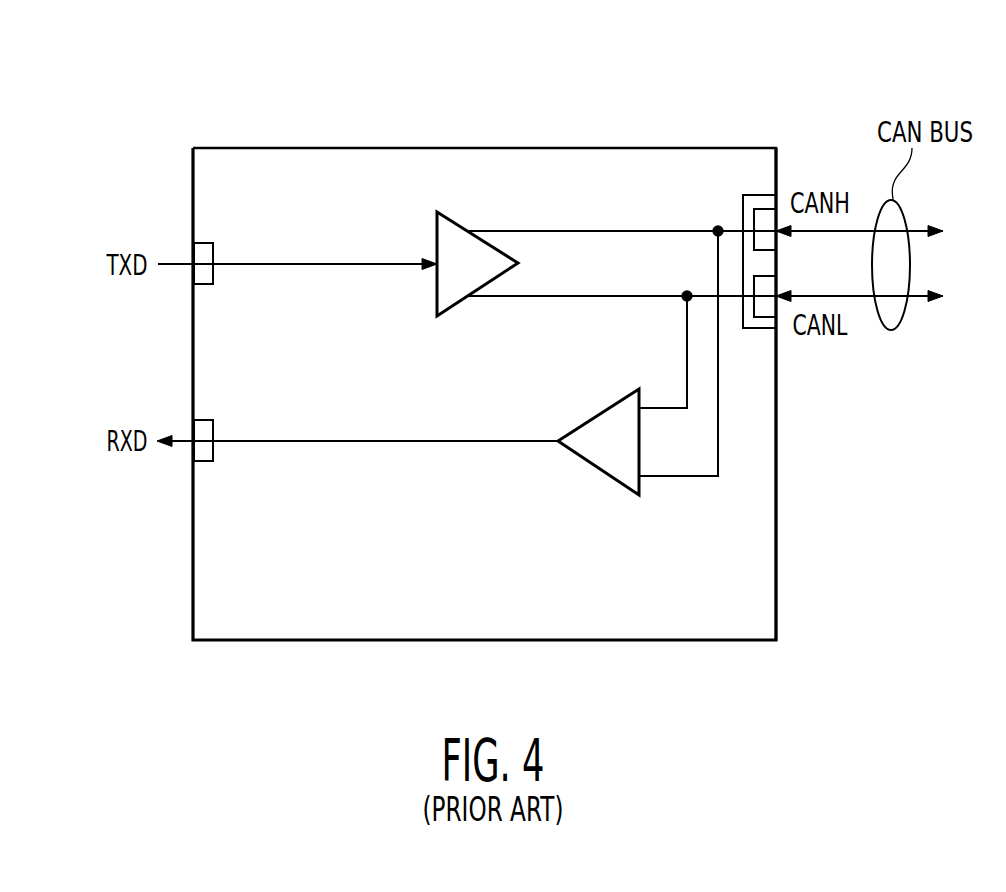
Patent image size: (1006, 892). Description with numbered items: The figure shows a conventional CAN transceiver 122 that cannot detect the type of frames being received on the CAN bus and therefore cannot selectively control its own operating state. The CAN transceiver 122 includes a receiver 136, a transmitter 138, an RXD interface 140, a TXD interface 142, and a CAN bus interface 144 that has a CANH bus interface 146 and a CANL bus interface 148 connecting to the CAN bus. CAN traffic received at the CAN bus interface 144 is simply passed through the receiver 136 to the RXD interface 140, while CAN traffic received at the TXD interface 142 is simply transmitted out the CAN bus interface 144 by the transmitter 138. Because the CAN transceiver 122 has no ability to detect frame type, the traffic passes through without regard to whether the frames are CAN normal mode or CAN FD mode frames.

The CAN transceiver 122 is at (233, 148).
The receiver 136 is at (583, 458).
The transmitter 138 is at (434, 299).
The RXD interface 140 is at (214, 452).
The TXD interface 142 is at (213, 257).
The CAN bus interface 144 is at (760, 195).
The CANH bus interface 146 is at (753, 215).
The CANL bus interface 148 is at (762, 318).